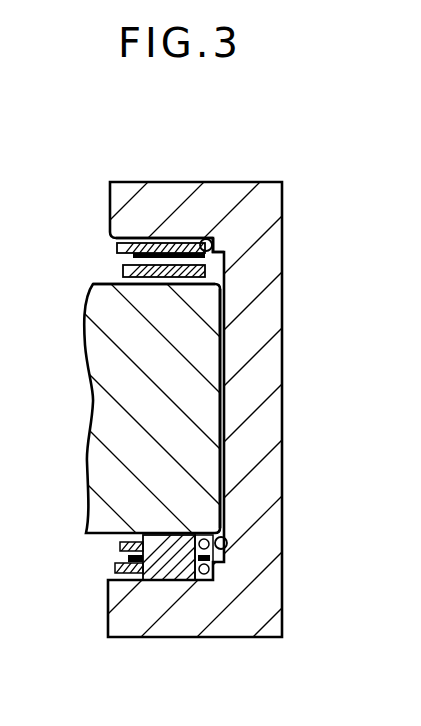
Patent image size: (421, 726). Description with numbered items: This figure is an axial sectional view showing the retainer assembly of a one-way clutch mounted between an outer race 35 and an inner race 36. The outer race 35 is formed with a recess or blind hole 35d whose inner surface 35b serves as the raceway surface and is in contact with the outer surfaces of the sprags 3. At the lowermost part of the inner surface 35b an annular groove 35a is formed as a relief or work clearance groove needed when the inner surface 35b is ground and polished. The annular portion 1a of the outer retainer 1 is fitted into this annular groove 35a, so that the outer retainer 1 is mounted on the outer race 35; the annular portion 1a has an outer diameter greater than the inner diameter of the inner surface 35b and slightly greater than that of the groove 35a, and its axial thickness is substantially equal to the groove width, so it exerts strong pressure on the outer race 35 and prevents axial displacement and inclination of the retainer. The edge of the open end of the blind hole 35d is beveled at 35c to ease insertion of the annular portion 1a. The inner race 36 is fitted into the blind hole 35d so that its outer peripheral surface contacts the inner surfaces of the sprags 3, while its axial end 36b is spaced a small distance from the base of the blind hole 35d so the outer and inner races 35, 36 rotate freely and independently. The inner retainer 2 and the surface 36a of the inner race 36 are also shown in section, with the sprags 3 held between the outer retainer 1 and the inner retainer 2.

The sprags 3 is at (158, 238).
The annular portion 1a is at (208, 238).
The outer race 35 is at (258, 193).
The annular groove 35a is at (214, 237).
The inner surface 35b is at (112, 239).
The beveled edge 35c is at (108, 582).
The blind hole 35d is at (228, 543).
The outer retainer 1 is at (122, 248).
The lower plate 2 is at (123, 268).
The inner race 36 is at (93, 363).
The upper surface of piston block 36a is at (92, 284).
The axial end 36b is at (219, 400).